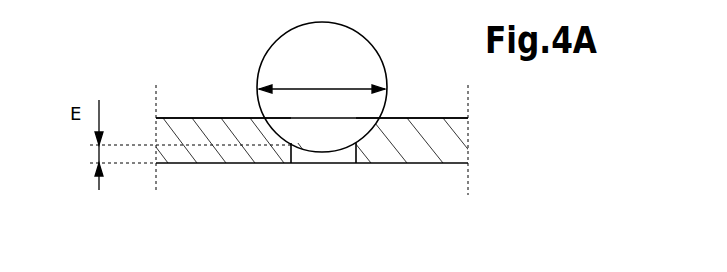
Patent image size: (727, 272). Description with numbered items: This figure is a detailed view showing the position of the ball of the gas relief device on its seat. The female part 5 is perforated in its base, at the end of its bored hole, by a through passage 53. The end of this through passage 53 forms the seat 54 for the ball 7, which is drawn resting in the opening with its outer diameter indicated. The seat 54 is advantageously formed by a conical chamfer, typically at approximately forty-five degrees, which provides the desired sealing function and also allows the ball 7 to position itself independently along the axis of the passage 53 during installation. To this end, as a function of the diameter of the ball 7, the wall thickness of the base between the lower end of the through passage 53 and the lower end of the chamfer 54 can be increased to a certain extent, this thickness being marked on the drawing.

The female part 5 is at (458, 130).
The ball 7 is at (360, 57).
The through passage 53 is at (298, 157).
The seat 54 is at (383, 137).